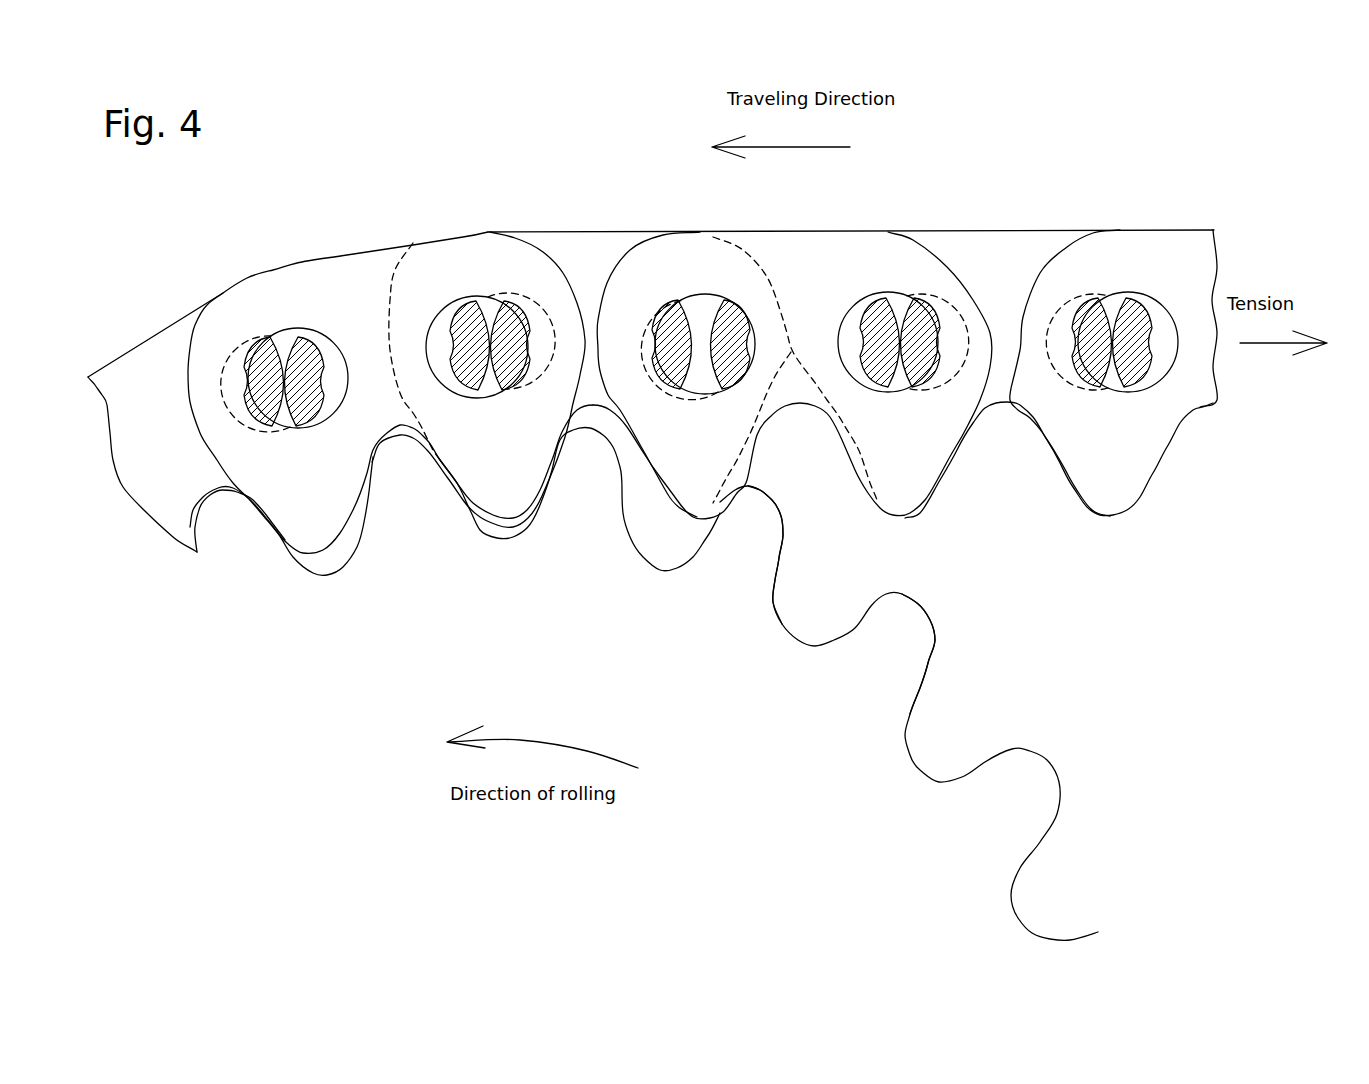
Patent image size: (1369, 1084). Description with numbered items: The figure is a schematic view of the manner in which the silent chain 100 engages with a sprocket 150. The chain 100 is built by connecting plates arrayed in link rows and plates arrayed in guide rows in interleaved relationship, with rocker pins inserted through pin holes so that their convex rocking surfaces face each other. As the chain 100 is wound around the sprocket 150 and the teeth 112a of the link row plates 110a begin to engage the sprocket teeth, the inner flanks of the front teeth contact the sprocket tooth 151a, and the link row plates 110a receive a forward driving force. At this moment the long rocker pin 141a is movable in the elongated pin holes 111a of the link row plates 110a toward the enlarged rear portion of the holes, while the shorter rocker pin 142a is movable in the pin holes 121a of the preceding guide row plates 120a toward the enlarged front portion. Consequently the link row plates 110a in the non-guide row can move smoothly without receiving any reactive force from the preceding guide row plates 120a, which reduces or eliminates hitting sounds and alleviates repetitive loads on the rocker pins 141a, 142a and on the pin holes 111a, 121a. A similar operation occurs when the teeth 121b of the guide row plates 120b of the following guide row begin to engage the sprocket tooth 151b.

The silent chain 100 is at (1110, 170).
The link row plate 110a is at (800, 273).
The elongated pin hole 111a is at (697, 322).
The tooth 112a is at (740, 433).
The guide row plate 120a is at (573, 273).
The guide row plate 120b is at (993, 260).
The pin hole 121a is at (647, 317).
The tooth 121b is at (965, 450).
The long rocker pin 141a is at (737, 320).
The short rocker pin 142a is at (675, 318).
The sprocket 150 is at (864, 776).
The sprocket tooth 151a is at (764, 533).
The sprocket tooth 151b is at (907, 632).